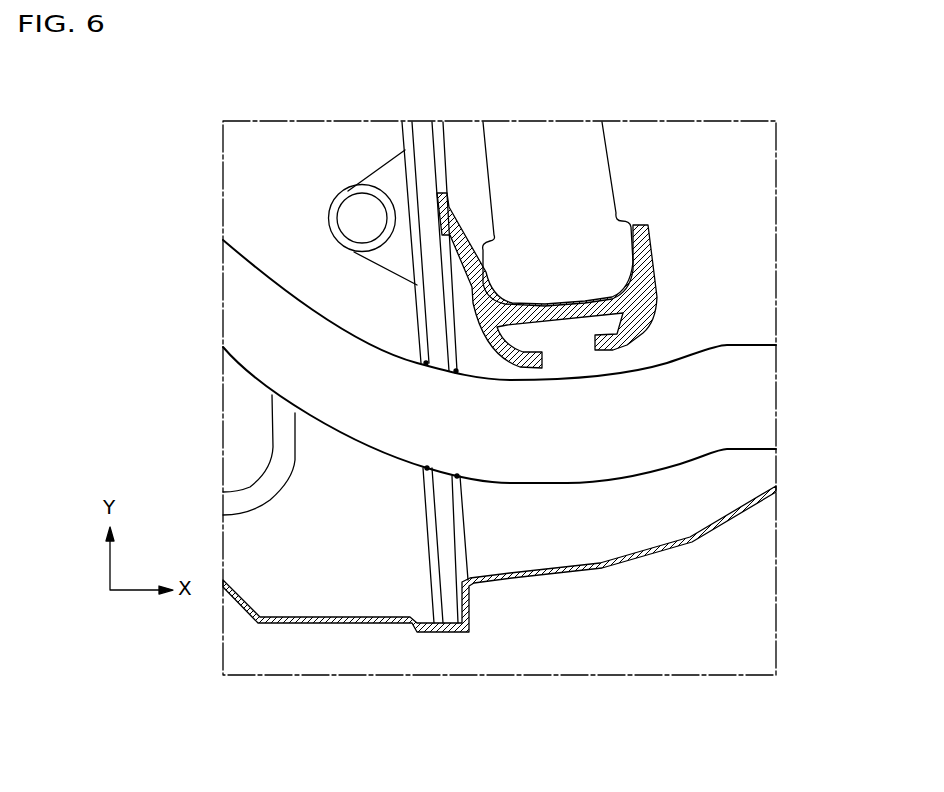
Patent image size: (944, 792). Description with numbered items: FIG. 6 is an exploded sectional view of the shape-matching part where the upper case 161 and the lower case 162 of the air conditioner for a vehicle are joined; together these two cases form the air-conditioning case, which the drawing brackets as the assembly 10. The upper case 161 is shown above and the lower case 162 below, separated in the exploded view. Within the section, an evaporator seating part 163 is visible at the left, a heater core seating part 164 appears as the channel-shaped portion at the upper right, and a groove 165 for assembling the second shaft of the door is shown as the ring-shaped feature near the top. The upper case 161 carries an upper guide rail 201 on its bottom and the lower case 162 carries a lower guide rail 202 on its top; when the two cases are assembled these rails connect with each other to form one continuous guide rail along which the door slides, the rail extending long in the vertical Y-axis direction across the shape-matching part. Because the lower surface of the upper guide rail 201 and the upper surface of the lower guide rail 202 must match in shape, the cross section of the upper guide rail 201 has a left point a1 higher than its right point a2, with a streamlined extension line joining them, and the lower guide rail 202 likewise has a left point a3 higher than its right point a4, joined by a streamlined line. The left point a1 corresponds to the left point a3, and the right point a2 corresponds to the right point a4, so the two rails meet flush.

The frame body 10 is at (858, 325).
The upper case 161 is at (745, 312).
The lower case 162 is at (752, 518).
The evaporator seating part 163 is at (243, 433).
The heater core seating part 164 is at (587, 188).
The groove for assembling the shaft 165 is at (358, 217).
The upper guide rail 201 is at (417, 307).
The lower guide rail 202 is at (428, 545).
The left point a1 is at (426, 363).
The right point a2 is at (456, 371).
The left point a3 is at (427, 468).
The right point a4 is at (457, 476).